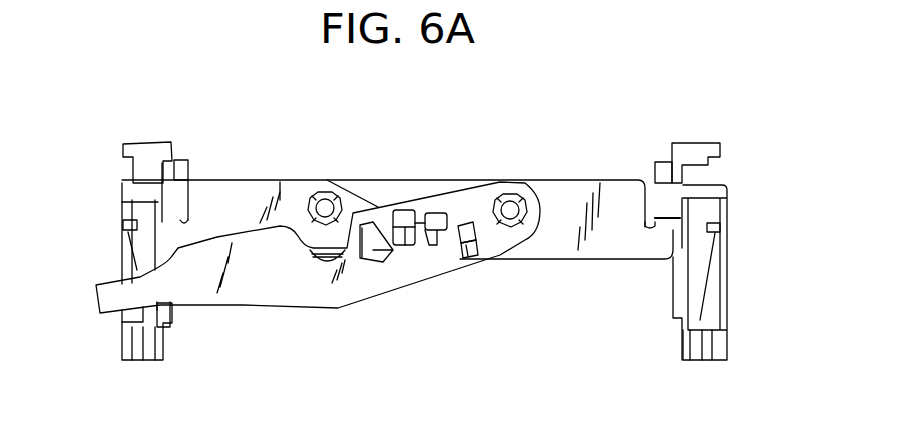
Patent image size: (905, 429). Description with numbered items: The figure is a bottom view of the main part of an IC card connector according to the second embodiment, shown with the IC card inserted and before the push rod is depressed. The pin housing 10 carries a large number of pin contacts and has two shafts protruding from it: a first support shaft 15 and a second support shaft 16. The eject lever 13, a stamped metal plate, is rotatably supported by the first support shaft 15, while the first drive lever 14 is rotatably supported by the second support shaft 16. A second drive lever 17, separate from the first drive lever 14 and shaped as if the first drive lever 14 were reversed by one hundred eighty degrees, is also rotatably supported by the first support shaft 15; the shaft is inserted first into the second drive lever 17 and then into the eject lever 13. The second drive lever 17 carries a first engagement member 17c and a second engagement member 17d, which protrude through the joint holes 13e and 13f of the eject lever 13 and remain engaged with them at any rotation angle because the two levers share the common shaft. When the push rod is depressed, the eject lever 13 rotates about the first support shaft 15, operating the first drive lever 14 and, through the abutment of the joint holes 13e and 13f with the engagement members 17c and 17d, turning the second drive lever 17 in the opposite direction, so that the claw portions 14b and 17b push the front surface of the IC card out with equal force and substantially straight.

The pin housing 10 is at (373, 180).
The eject lever 13 is at (243, 308).
The joint hole 13e is at (432, 212).
The joint hole 13f is at (470, 223).
The drive lever 14 is at (144, 231).
The claw portion 14b is at (158, 201).
The first support shaft 15 is at (522, 192).
The second support shaft 16 is at (325, 192).
The second drive lever 17 is at (695, 231).
The claw portion 17b is at (663, 211).
The first engagement member 17c is at (422, 248).
The second engagement member 17d is at (477, 234).